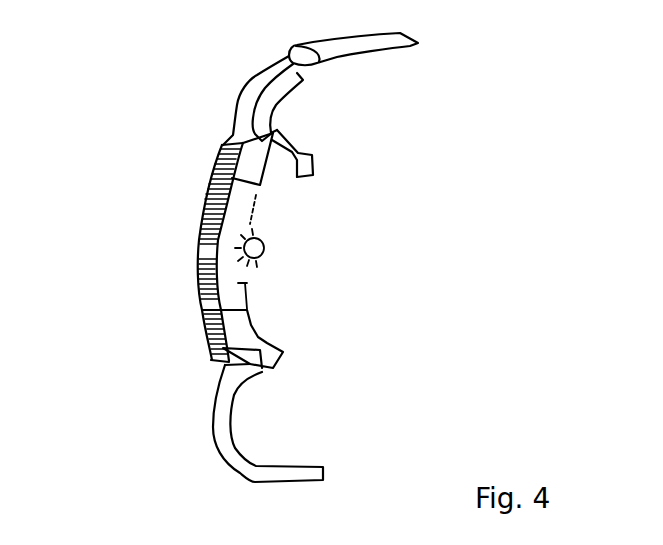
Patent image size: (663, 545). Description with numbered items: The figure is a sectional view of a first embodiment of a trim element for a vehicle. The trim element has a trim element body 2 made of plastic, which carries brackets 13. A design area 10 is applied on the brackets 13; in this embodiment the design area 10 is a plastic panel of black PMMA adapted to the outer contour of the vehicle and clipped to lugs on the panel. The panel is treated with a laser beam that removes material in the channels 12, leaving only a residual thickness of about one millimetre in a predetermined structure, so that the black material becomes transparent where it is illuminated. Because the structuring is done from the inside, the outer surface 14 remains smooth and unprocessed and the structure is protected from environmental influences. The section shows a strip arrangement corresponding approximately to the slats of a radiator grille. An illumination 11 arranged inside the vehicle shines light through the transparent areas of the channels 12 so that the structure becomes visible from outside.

The trim element body 2 is at (244, 85).
The design area 10 is at (215, 168).
The illumination 11 is at (266, 250).
The channels 12 is at (197, 253).
The brackets 13 is at (283, 351).
The outer surface 14 is at (200, 225).